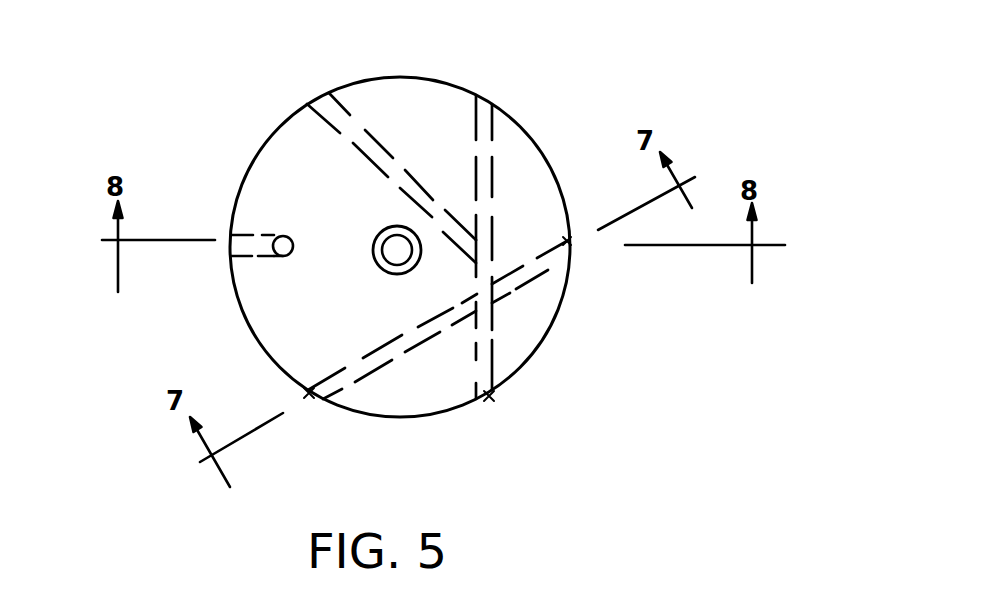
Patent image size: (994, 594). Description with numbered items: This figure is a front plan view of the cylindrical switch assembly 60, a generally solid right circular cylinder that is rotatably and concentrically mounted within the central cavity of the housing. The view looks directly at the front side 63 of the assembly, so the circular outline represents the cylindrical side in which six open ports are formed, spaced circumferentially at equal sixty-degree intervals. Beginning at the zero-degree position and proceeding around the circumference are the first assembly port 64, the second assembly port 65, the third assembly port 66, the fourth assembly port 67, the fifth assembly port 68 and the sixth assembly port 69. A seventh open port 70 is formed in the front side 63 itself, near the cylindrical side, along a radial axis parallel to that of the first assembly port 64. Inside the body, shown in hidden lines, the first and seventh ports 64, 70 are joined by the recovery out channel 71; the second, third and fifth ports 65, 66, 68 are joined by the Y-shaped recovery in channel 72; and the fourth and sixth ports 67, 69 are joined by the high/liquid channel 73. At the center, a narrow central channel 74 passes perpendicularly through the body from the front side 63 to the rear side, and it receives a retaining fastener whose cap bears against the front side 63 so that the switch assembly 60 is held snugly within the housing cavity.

The cylindrical switch assembly 60 is at (427, 78).
The front side 63 is at (366, 213).
The first assembly port 64 is at (238, 238).
The second assembly port 65 is at (317, 98).
The third assembly port 66 is at (488, 102).
The fourth assembly port 67 is at (570, 243).
The fifth assembly port 68 is at (490, 396).
The sixth assembly port 69 is at (320, 394).
The seventh open port 70 is at (295, 254).
The recovery out channel 71 is at (260, 235).
The recovery in channel 72 is at (485, 207).
The high/liquid channel 73 is at (395, 352).
The central channel 74 is at (390, 250).